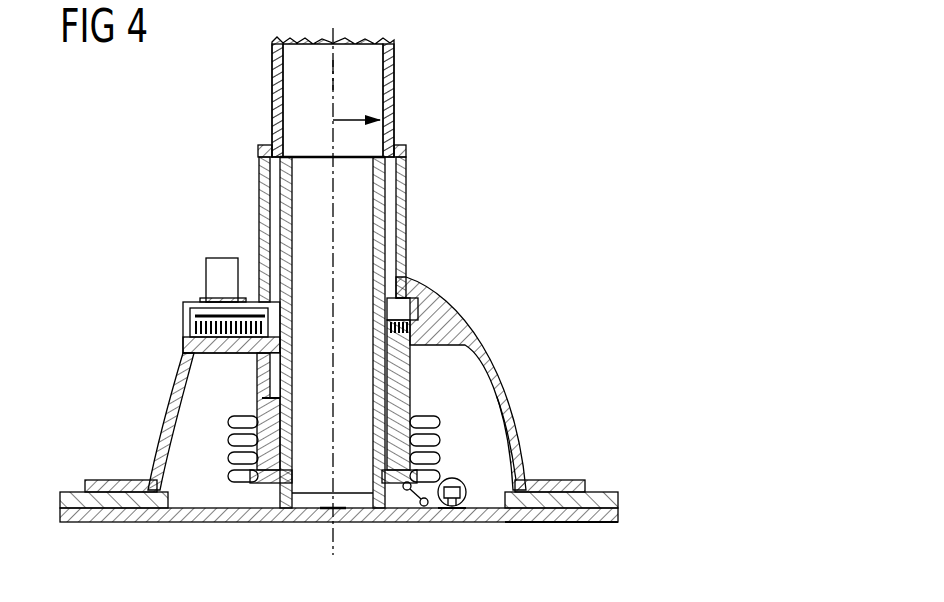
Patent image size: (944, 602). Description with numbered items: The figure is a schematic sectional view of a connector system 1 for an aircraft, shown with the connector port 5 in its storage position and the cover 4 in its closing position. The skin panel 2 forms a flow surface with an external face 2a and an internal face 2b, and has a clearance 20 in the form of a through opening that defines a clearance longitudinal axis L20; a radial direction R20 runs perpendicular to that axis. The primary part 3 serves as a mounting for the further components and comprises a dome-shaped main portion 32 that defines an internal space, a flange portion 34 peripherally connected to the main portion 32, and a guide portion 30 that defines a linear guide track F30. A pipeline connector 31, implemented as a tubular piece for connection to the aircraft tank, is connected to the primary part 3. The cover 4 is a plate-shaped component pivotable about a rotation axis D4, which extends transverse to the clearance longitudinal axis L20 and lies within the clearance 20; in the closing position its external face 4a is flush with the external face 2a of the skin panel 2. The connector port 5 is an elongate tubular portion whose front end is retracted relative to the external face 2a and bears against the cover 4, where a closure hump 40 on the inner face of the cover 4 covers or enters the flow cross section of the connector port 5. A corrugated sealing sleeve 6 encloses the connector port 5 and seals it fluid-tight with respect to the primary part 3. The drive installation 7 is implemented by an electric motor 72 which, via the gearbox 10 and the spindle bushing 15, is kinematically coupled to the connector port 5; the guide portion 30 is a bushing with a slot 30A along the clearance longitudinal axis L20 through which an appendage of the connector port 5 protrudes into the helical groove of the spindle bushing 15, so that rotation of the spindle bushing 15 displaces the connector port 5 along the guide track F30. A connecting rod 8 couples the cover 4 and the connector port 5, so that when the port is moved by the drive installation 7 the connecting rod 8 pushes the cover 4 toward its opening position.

The connector system 1 is at (108, 190).
The skin panel 2 is at (550, 507).
The external face 2a is at (560, 524).
The internal face 2b is at (595, 487).
The primary part 3 is at (456, 324).
The cover 4 is at (250, 522).
The external face of the cover 4a is at (325, 524).
The connector port 5 is at (386, 224).
The sealing sleeve 6 is at (232, 460).
The drive installation 7 is at (200, 275).
The connecting rod 8 is at (422, 526).
The gearbox 10 is at (178, 322).
The spindle bushing 15 is at (262, 426).
The clearance 20 is at (165, 525).
The guide portion 30 is at (416, 378).
The slot 30A is at (266, 374).
The pipeline connector 31 is at (404, 130).
The main portion 32 is at (510, 400).
The flange portion 34 is at (105, 480).
The closure hump 40 is at (355, 500).
The electric motor 72 is at (222, 270).
The rotation axis D4 is at (455, 520).
The clearance longitudinal axis L20 is at (333, 76).
The guide track F30 is at (272, 77).
The radial direction R20 is at (362, 118).